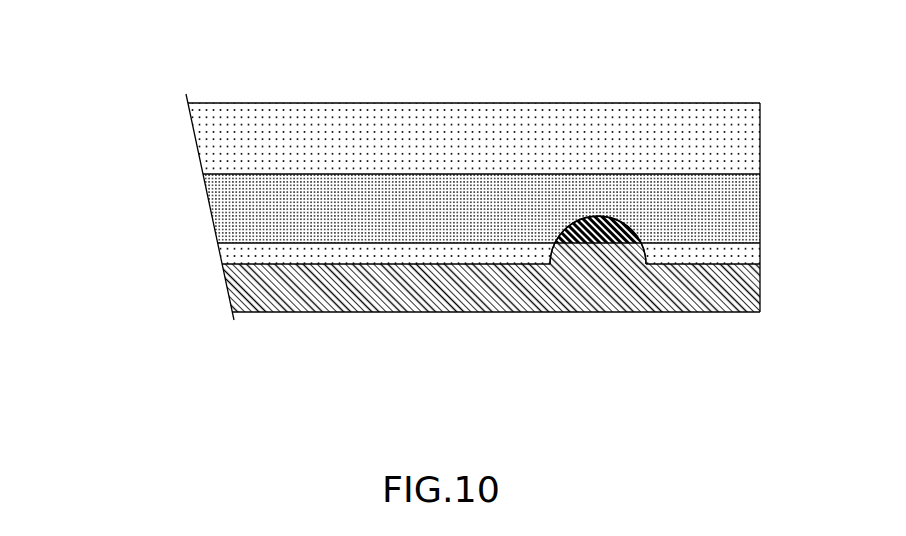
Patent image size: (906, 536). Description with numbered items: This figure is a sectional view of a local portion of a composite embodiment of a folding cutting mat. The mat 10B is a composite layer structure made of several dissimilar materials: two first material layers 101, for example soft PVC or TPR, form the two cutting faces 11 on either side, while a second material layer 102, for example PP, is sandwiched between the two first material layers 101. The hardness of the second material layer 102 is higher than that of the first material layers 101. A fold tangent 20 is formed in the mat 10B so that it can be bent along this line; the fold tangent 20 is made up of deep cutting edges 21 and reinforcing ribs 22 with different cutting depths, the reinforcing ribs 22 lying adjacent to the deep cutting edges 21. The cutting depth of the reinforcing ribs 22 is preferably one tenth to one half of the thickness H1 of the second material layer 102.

The mat 10B is at (93, 153).
The first material layer 101 is at (205, 132).
The second material layer 102 is at (221, 200).
The cutting face 11 is at (278, 103).
The fold tangent 20 is at (737, 50).
The deep cutting edge 21 is at (683, 263).
The reinforcing rib 22 is at (598, 217).
The thickness of the second material layer H1 is at (760, 208).